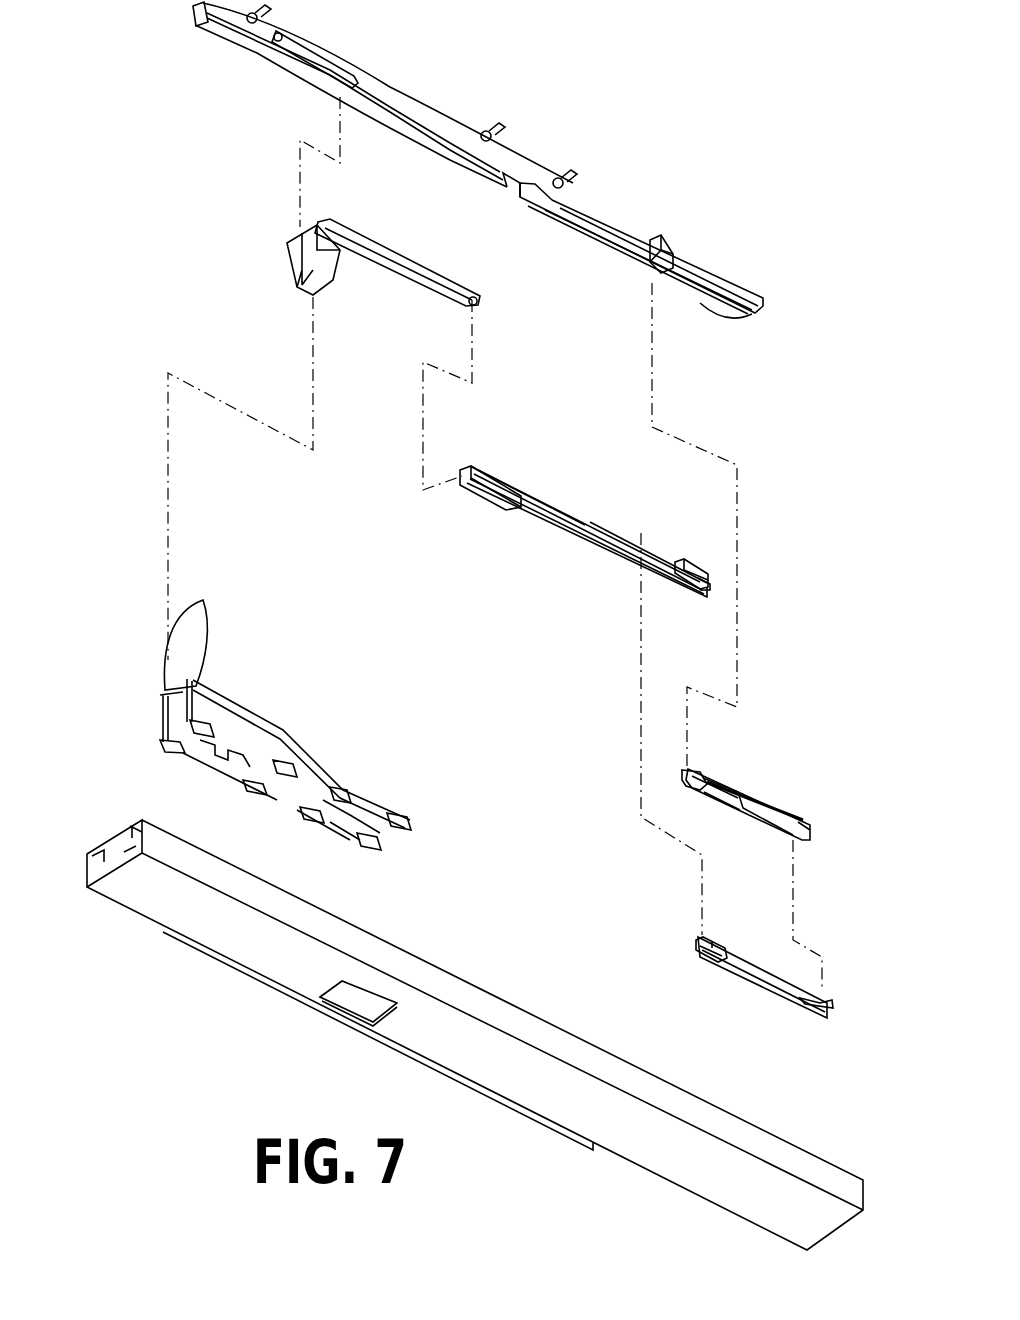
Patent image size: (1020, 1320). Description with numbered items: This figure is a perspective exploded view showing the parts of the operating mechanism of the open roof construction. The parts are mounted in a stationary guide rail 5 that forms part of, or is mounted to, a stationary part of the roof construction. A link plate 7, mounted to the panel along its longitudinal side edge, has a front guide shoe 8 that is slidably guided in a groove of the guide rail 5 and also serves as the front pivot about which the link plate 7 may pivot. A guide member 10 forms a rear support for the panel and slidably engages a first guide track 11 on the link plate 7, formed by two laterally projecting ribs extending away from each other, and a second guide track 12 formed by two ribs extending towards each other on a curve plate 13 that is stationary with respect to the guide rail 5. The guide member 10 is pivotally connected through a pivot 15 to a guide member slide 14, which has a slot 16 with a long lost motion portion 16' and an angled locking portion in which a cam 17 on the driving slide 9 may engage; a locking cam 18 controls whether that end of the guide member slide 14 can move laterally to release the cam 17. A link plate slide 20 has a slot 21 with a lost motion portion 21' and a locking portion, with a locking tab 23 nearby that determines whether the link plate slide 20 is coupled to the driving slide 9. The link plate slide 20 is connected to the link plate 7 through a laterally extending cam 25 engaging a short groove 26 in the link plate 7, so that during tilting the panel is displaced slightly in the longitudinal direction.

The stationary guide rail 5 is at (152, 905).
The link plate 7 is at (397, 72).
The front guide shoe 8 is at (722, 318).
The driving slide 9 is at (750, 970).
The guide member 10 is at (288, 246).
The first guide track 11 is at (313, 75).
The second guide track 12 is at (199, 633).
The curve plate 13 is at (244, 725).
The guide member slide 14 is at (607, 528).
The pivot 15 is at (473, 297).
The slot 16 is at (587, 537).
The lost motion portion 16' is at (487, 515).
The cam 17 is at (703, 937).
The locking cam 18 is at (681, 558).
The link plate slide 20 is at (742, 793).
The slot 21 is at (760, 790).
The lost motion portion 21' is at (832, 806).
The locking tab 23 is at (722, 802).
The laterally extending cam 25 is at (692, 788).
The short groove 26 is at (664, 248).